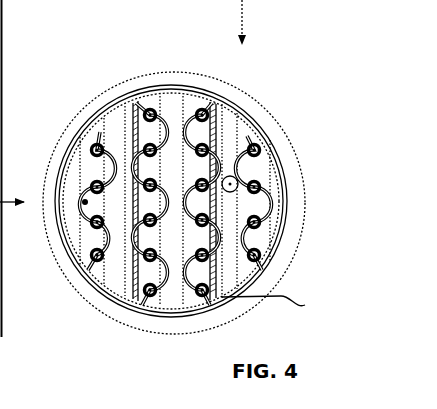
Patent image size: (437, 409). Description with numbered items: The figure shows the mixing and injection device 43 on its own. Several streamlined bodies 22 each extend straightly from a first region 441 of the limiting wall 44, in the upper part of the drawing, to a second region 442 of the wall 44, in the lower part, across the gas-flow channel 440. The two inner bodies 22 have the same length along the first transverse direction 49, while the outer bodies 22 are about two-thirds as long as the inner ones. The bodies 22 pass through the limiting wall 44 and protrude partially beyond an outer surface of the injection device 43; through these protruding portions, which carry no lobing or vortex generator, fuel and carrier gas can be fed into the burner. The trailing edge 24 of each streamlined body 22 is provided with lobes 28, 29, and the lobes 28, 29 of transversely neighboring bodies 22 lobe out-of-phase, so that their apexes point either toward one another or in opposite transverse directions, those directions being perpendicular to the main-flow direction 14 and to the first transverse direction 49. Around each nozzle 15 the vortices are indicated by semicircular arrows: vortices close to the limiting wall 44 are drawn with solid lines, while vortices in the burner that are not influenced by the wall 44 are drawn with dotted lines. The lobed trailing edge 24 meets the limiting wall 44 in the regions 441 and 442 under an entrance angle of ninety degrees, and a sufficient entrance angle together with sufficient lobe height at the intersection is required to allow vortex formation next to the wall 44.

The first region of the wall 441 is at (98, 130).
The lobe 28 is at (132, 135).
The lobe 29 is at (252, 148).
The nozzle 15 is at (240, 176).
The first transverse direction 49 is at (232, 35).
The mixing and injection device 43 is at (297, 110).
The trailing edge 24 is at (85, 200).
The main-flow direction 14 is at (238, 180).
The limiting wall 44 is at (258, 208).
The streamlined body 22 is at (196, 272).
The gas-flow channel 440 is at (190, 221).
The second region of the wall 442 is at (90, 250).